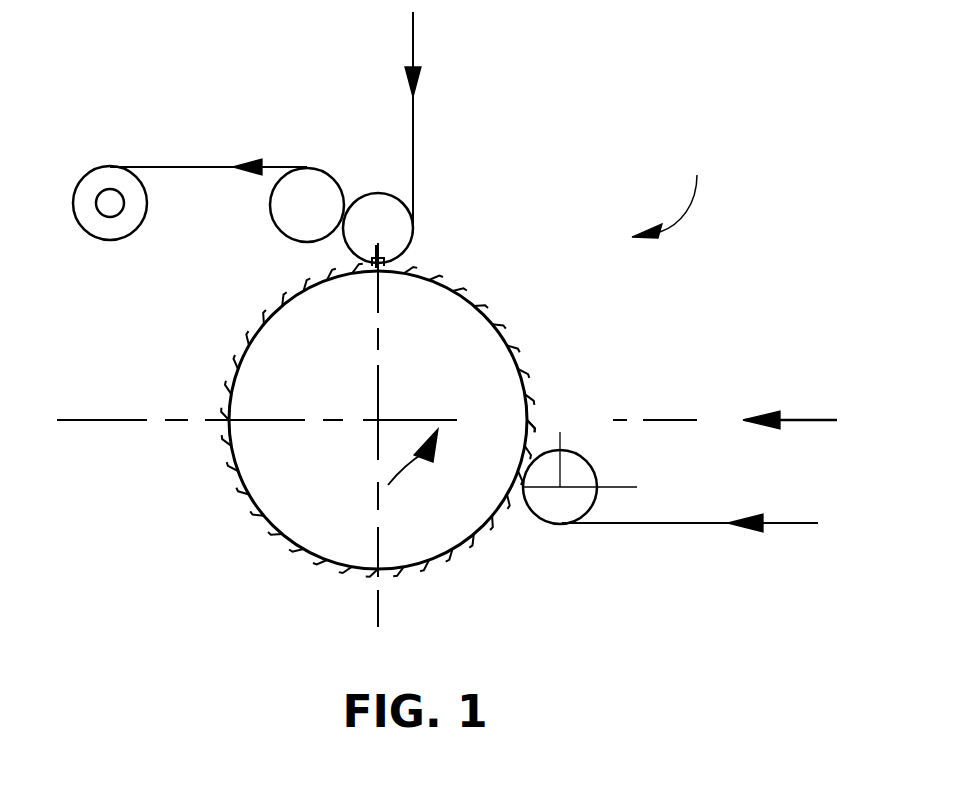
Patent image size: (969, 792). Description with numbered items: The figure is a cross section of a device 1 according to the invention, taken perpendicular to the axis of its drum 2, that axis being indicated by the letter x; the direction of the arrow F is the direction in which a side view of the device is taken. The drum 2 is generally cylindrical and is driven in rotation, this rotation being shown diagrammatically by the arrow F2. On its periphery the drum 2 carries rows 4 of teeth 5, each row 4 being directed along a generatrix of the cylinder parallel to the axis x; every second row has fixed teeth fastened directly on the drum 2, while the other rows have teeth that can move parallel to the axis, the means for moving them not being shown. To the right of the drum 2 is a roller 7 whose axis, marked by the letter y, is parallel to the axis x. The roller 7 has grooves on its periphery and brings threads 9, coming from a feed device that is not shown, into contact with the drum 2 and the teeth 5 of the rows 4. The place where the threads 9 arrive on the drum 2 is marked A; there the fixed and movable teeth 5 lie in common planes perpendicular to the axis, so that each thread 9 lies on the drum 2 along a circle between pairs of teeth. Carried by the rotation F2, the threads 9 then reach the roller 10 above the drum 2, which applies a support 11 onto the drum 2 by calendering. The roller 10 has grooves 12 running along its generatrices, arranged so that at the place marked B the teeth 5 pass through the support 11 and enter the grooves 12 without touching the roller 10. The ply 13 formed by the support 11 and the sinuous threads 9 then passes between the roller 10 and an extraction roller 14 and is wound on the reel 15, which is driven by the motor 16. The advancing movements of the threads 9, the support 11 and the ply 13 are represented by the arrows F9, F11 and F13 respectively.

The device 1 is at (668, 189).
The drum 2 is at (265, 518).
The rows of teeth 4 is at (475, 300).
The teeth 5 is at (507, 343).
The roller 7 is at (545, 522).
The threads 9 is at (665, 524).
The roller 10 is at (413, 237).
The support 11 is at (413, 152).
The grooves 12 is at (368, 268).
The ply 13 is at (137, 166).
The extraction roller 14 is at (275, 234).
The reel 15 is at (147, 216).
The motor 16 is at (82, 220).
The place of thread contact A is at (530, 405).
The place of support application B is at (377, 280).
The axis xx' x is at (378, 422).
The axis yy' y is at (597, 470).
The arrow F is at (790, 400).
The arrow F2 is at (438, 447).
The arrow F9 is at (785, 524).
The arrow F11 is at (413, 55).
The arrow F13 is at (265, 166).